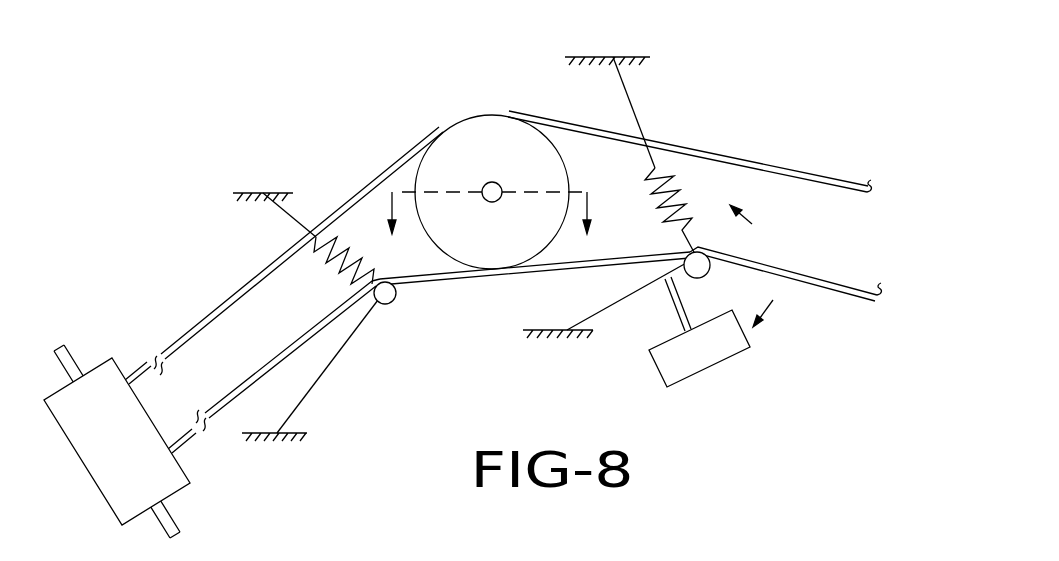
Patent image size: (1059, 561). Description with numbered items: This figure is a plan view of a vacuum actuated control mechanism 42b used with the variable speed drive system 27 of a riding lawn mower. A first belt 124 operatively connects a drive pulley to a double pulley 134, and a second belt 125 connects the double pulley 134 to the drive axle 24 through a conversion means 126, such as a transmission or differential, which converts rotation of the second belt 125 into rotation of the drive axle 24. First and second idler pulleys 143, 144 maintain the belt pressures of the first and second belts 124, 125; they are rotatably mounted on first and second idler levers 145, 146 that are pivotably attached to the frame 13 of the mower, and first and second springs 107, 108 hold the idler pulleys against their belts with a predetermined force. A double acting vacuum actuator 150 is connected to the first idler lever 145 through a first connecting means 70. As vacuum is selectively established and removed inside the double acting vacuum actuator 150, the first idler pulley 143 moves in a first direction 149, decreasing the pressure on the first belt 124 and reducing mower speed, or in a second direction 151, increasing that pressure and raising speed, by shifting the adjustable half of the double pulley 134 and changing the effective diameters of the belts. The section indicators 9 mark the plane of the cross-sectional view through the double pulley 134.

The variable speed drive system 27 is at (352, 92).
The double pulley 134 is at (472, 125).
The frame 13 is at (256, 193).
The section line reference 9 is at (488, 225).
The first spring 107 is at (663, 172).
The second spring 108 is at (247, 280).
The first belt 124 is at (770, 170).
The second belt 125 is at (204, 314).
The conversion means 126 is at (138, 450).
The drive axle 24 is at (182, 524).
The first idler pulley 143 is at (708, 274).
The second idler pulley 144 is at (397, 297).
The first idler lever 145 is at (614, 301).
The second idler lever 146 is at (323, 372).
The first direction 149 is at (772, 280).
The double acting vacuum actuator 150 is at (688, 363).
The second direction 151 is at (765, 248).
The first connecting means 70 is at (667, 309).
The vacuum actuated control mechanism 42b is at (800, 432).